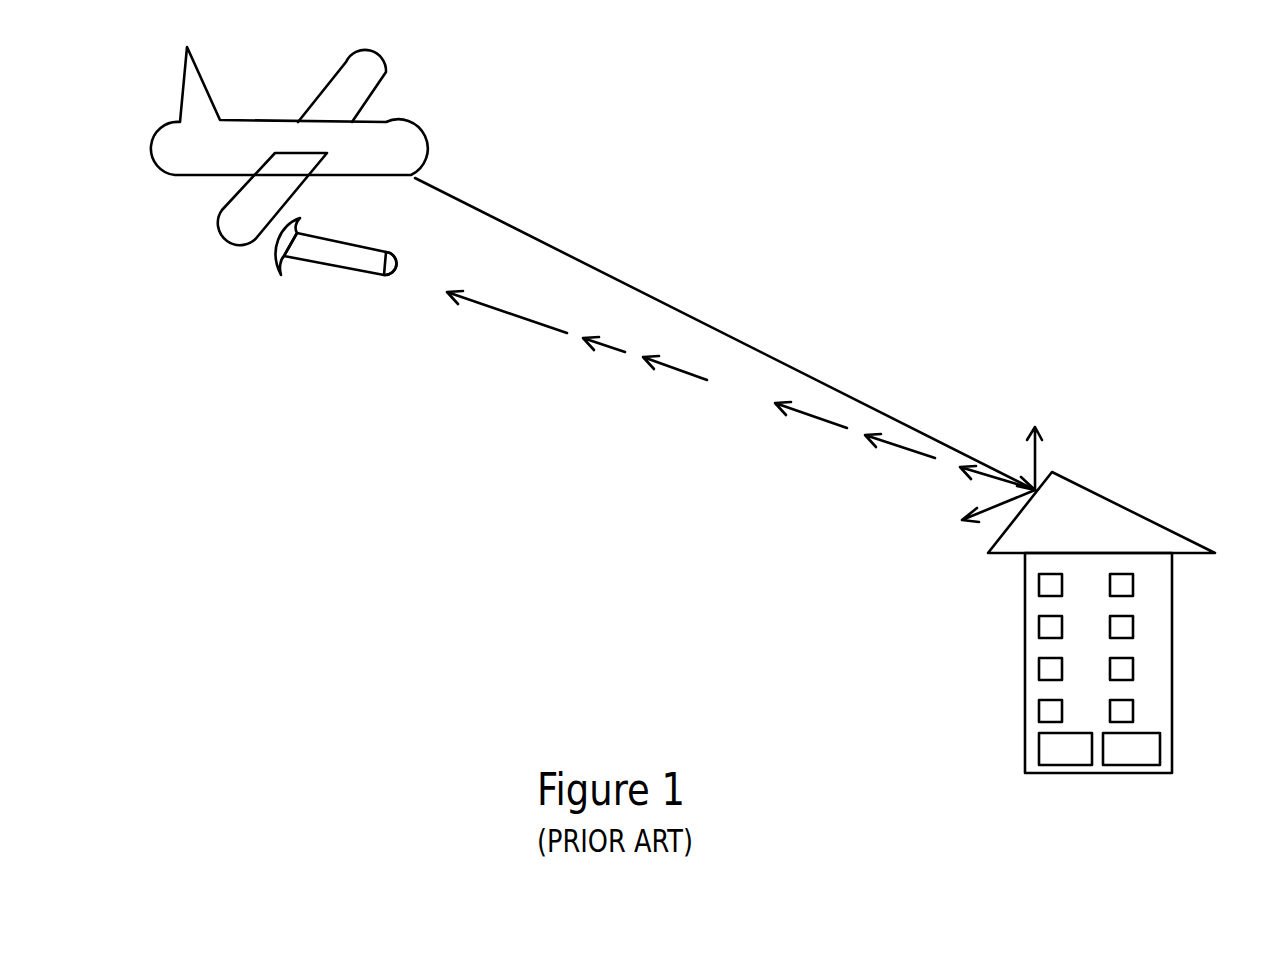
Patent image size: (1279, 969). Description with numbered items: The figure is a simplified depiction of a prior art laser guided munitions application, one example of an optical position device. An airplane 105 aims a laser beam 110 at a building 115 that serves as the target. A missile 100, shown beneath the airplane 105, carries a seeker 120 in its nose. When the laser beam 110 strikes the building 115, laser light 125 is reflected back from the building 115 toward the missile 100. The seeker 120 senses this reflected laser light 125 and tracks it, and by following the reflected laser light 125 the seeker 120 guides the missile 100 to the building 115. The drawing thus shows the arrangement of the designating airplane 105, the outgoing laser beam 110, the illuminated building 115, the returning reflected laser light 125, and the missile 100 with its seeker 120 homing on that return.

The missile 100 is at (303, 263).
The airplane 105 is at (410, 123).
The laser beam 110 is at (627, 283).
The building 115 is at (1172, 615).
The seeker 120 is at (387, 277).
The reflected laser light 125 is at (516, 316).